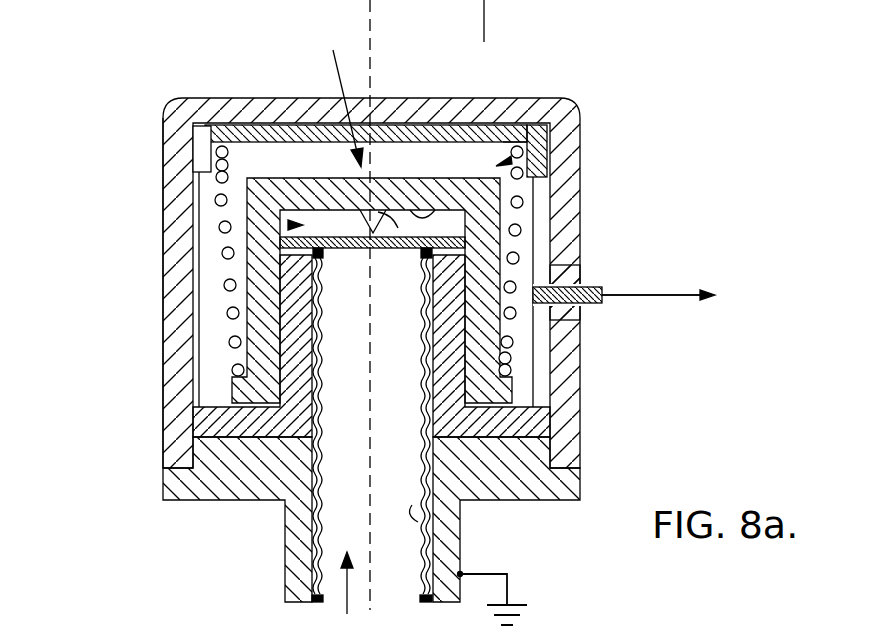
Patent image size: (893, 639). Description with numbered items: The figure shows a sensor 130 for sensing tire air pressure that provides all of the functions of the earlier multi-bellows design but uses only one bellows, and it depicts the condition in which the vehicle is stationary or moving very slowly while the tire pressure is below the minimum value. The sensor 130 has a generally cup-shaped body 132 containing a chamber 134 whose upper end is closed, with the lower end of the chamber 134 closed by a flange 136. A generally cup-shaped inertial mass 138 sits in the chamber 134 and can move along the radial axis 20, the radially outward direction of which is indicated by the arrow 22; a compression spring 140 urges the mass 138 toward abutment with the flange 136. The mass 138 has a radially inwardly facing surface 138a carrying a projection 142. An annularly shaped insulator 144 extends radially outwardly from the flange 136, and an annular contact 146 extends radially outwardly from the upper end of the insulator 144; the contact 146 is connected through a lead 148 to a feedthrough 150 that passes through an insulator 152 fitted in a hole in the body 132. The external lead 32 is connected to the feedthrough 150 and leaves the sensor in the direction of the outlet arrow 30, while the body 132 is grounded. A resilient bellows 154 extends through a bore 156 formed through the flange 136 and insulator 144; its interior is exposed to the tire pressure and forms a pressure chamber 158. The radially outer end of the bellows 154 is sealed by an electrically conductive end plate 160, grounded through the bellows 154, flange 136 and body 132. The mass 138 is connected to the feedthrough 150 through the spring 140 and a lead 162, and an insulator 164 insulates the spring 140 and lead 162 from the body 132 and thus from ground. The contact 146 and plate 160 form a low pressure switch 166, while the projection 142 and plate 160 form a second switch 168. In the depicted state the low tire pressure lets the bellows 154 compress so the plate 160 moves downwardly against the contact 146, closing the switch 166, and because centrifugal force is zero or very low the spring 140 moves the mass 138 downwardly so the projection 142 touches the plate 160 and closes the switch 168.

The sensor 130 is at (393, 317).
The body 132 is at (177, 155).
The chamber 134 is at (543, 147).
The flange 136 is at (257, 500).
The inertial mass 138 is at (250, 310).
The radially inwardly facing surface 138a is at (422, 212).
The compression spring 140 is at (215, 201).
The projection 142 is at (384, 212).
The insulator 144 is at (200, 420).
The annular contact 146 is at (278, 244).
The lead 148 is at (535, 375).
The feedthrough 150 is at (595, 305).
The insulator 152 is at (582, 276).
The resilient bellows 154 is at (423, 578).
The bore 156 is at (415, 518).
The pressure chamber 158 is at (340, 593).
The end plate 160 is at (318, 252).
The lead 162 is at (458, 253).
The insulator 164 is at (527, 97).
The low pressure switch 166 is at (290, 225).
The switch 168 is at (340, 96).
The radial axis 20 is at (371, 42).
The arrow 22 is at (485, 10).
The outlet flow 30 is at (674, 295).
The lead 32 is at (648, 295).